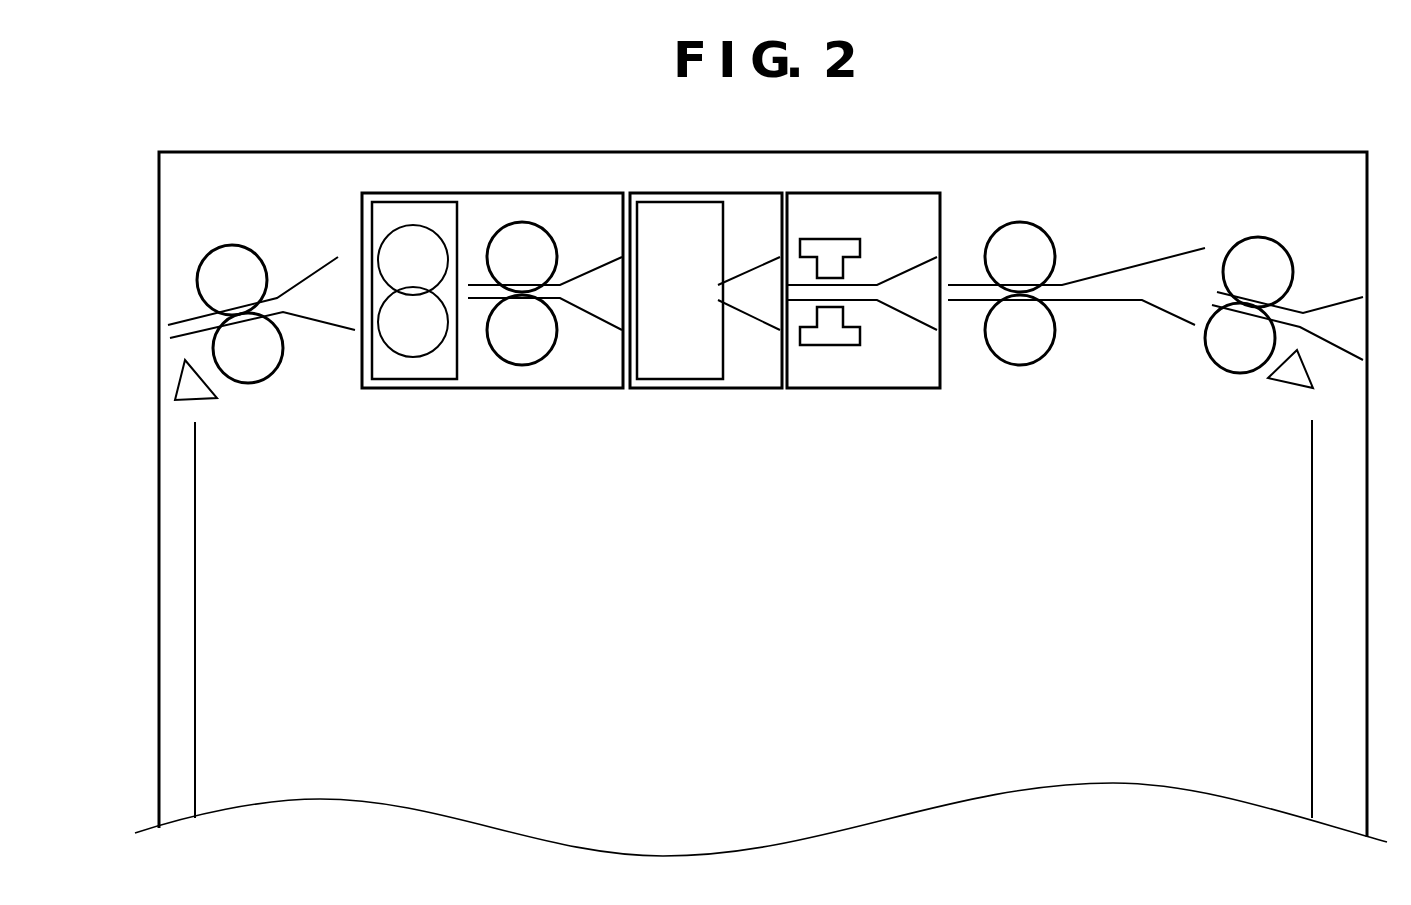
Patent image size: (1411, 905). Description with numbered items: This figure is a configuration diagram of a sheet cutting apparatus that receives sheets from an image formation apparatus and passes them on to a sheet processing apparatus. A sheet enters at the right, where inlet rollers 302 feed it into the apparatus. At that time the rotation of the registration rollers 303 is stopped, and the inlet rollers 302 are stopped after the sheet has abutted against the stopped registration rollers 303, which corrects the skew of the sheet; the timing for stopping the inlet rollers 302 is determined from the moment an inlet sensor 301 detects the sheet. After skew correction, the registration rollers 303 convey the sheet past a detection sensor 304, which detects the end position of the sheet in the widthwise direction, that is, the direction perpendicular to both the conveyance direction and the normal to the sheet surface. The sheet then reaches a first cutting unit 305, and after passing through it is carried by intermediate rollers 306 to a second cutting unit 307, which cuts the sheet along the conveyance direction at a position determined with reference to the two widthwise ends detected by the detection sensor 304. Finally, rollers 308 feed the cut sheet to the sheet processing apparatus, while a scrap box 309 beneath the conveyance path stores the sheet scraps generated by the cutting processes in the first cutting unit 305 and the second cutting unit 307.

The inlet sensor 301 is at (1275, 382).
The inlet rollers 302 is at (1288, 218).
The registration rollers 303 is at (1040, 222).
The detection sensor 304 is at (852, 350).
The first cutting unit 305 is at (695, 208).
The intermediate rollers 306 is at (543, 357).
The second cutting unit 307 is at (410, 210).
The rollers 308 is at (280, 373).
The scrap box 309 is at (212, 645).